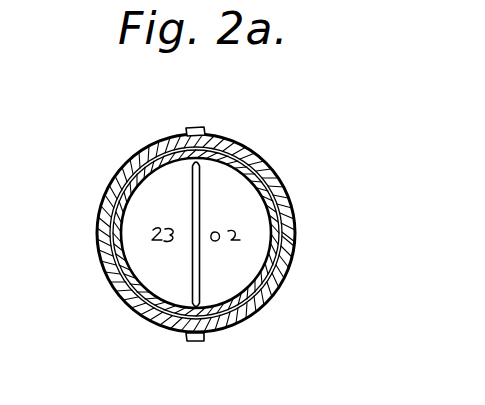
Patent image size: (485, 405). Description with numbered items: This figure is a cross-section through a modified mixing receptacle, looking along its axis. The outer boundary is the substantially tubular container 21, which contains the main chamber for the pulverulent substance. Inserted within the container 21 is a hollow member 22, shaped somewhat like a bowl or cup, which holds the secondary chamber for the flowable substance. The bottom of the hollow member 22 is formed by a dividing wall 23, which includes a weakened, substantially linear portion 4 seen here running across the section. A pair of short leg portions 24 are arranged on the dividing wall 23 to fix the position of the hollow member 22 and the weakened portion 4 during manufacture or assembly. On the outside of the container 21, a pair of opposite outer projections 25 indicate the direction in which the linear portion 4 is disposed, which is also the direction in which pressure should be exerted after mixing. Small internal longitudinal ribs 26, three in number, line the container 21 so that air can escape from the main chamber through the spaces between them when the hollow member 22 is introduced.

The weakened substantially linear portion 4 is at (198, 182).
The tubular container 21 is at (101, 270).
The hollow member 22 is at (272, 190).
The dividing wall 23 is at (163, 188).
The short leg portions 24 is at (152, 229).
The outer projections 25 is at (197, 128).
The internal longitudinal ribs 26 is at (187, 142).